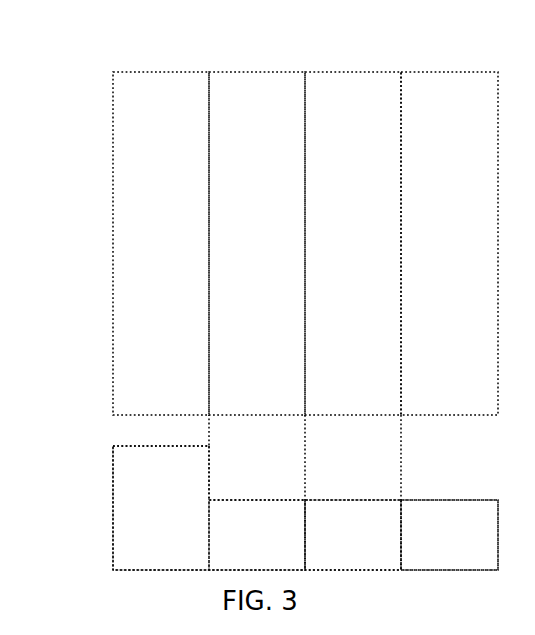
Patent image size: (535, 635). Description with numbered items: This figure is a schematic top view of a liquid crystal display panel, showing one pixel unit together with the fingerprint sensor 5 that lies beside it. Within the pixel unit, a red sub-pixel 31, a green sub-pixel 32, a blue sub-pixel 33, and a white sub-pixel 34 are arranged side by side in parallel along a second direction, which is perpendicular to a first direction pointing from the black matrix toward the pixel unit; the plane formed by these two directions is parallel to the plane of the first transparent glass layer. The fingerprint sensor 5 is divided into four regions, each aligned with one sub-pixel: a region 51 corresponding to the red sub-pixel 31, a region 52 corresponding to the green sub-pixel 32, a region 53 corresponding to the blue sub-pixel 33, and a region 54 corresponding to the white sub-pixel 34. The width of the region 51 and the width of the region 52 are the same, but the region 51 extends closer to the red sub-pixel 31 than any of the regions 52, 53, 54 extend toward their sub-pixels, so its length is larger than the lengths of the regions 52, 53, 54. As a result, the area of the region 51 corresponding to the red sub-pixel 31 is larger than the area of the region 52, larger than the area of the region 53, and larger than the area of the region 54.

The fingerprint sensor 5 is at (116, 527).
The red sub-pixel 31 is at (167, 90).
The green sub-pixel 32 is at (259, 88).
The blue sub-pixel 33 is at (358, 88).
The white sub-pixel 34 is at (447, 88).
The region corresponding to the red sub-pixel 51 is at (150, 483).
The region corresponding to the green sub-pixel 52 is at (243, 517).
The region corresponding to the blue sub-pixel 53 is at (345, 520).
The region corresponding to the white sub-pixel 54 is at (423, 520).